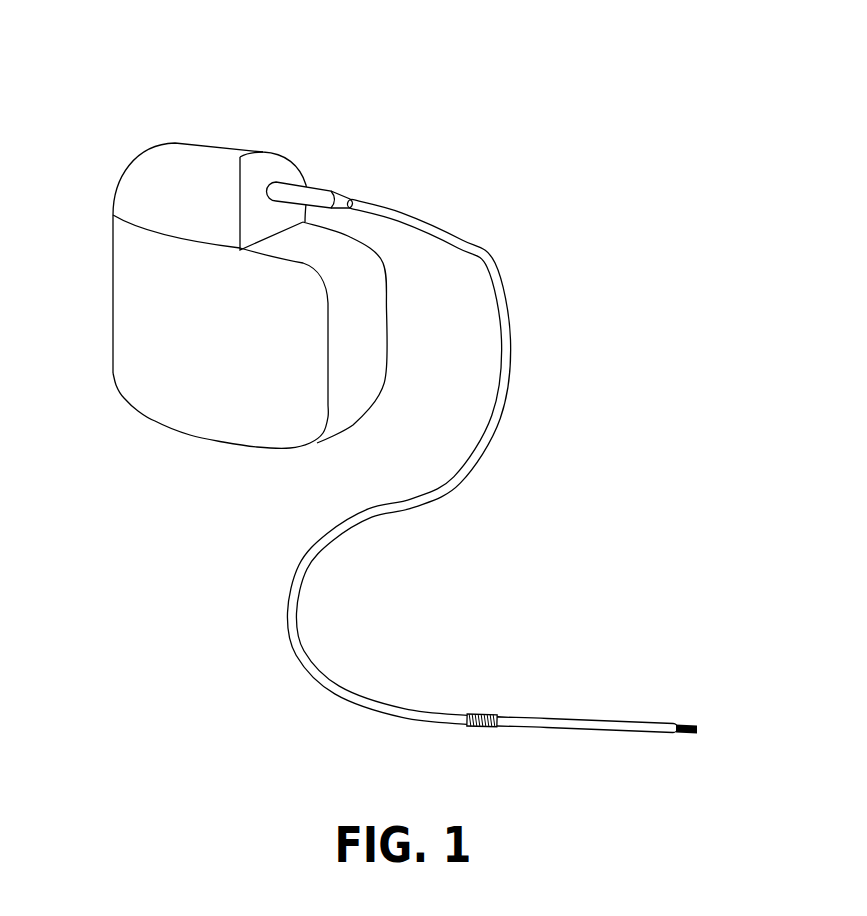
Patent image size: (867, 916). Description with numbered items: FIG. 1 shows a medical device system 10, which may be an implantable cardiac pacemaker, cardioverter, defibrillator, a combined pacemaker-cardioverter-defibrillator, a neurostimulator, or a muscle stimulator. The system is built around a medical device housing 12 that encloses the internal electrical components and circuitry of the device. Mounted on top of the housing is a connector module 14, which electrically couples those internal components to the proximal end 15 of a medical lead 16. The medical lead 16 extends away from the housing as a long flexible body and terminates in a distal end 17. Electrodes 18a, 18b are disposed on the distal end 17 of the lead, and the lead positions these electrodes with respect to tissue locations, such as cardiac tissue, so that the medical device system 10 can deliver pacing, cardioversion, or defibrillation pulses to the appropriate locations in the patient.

The medical device system 10 is at (310, 96).
The medical device housing 12 is at (112, 320).
The connector module 14 is at (160, 180).
The proximal end 15 is at (323, 183).
The medical lead 16 is at (510, 342).
The distal end 17 is at (550, 678).
The electrode 18a is at (488, 713).
The electrode 18b is at (680, 734).